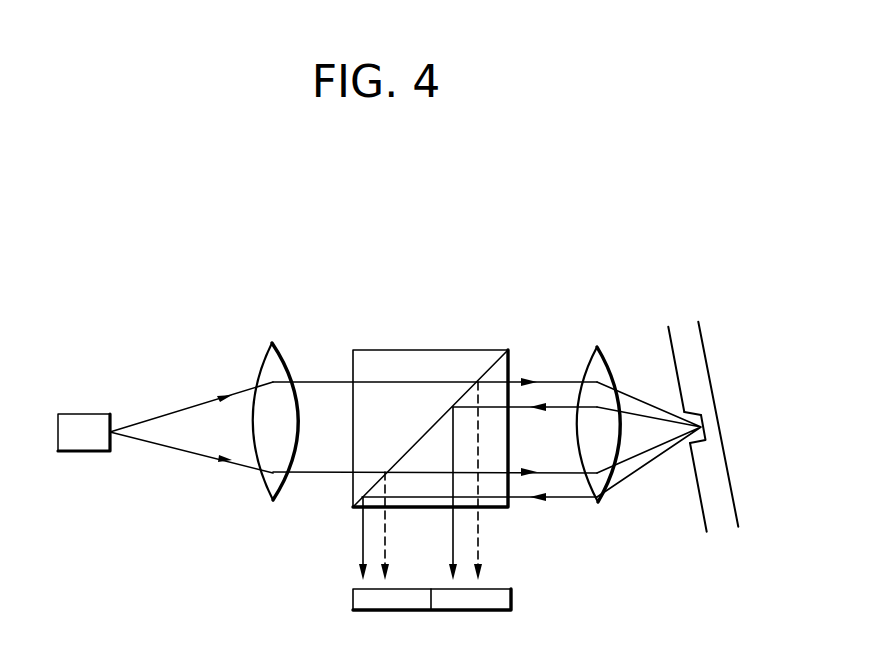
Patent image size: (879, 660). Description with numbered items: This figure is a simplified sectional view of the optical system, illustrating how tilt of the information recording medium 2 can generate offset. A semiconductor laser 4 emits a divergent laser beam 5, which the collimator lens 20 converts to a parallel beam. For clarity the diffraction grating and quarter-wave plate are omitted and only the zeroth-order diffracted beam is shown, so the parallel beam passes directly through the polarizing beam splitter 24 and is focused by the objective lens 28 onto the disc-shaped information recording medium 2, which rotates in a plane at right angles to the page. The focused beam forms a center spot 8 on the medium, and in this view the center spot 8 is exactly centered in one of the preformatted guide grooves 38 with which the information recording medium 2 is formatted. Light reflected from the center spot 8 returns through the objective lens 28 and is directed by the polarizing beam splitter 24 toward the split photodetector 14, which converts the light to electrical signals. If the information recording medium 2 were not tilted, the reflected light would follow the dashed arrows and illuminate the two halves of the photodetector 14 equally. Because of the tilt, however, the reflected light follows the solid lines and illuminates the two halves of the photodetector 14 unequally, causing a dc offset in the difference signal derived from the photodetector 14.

The semiconductor laser 4 is at (90, 452).
The laser beam 5 is at (187, 452).
The collimator lens 20 is at (270, 494).
The polarizing beam splitter 24 is at (407, 352).
The objective lens 28 is at (600, 500).
The information recording medium 2 is at (717, 498).
The guide groove 38 is at (697, 410).
The center spot 8 is at (703, 432).
The split photodetector 14 is at (353, 598).